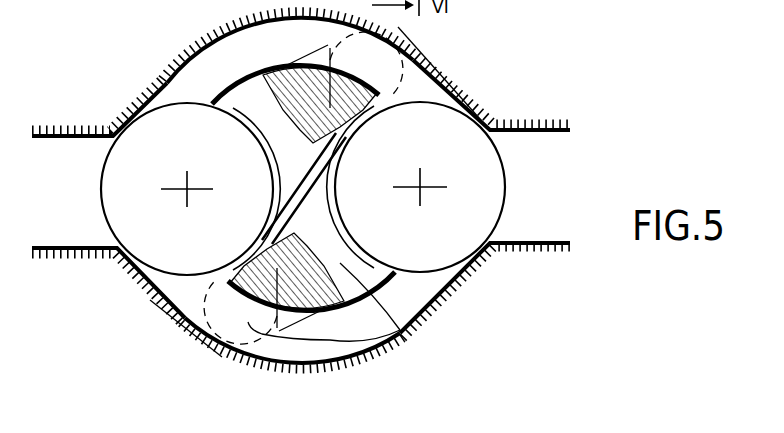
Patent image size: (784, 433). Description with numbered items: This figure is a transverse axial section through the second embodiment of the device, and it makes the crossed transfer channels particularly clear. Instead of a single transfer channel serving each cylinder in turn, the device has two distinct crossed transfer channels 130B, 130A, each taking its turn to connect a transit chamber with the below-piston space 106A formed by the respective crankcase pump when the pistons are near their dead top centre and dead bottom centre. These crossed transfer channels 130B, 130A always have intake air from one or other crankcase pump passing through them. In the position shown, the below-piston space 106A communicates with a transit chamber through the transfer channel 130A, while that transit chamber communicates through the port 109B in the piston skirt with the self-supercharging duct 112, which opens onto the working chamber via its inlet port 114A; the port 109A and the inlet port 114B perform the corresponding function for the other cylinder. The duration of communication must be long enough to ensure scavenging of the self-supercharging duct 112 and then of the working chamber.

The below-piston space 106A is at (115, 0).
The port 109A is at (195, 104).
The port 109B is at (430, 96).
The self-supercharging duct 112 is at (440, 68).
The inlet port 114A is at (158, 84).
The inlet port 114B is at (452, 93).
The transfer channel 130A is at (398, 333).
The transfer channel 130B is at (350, 57).